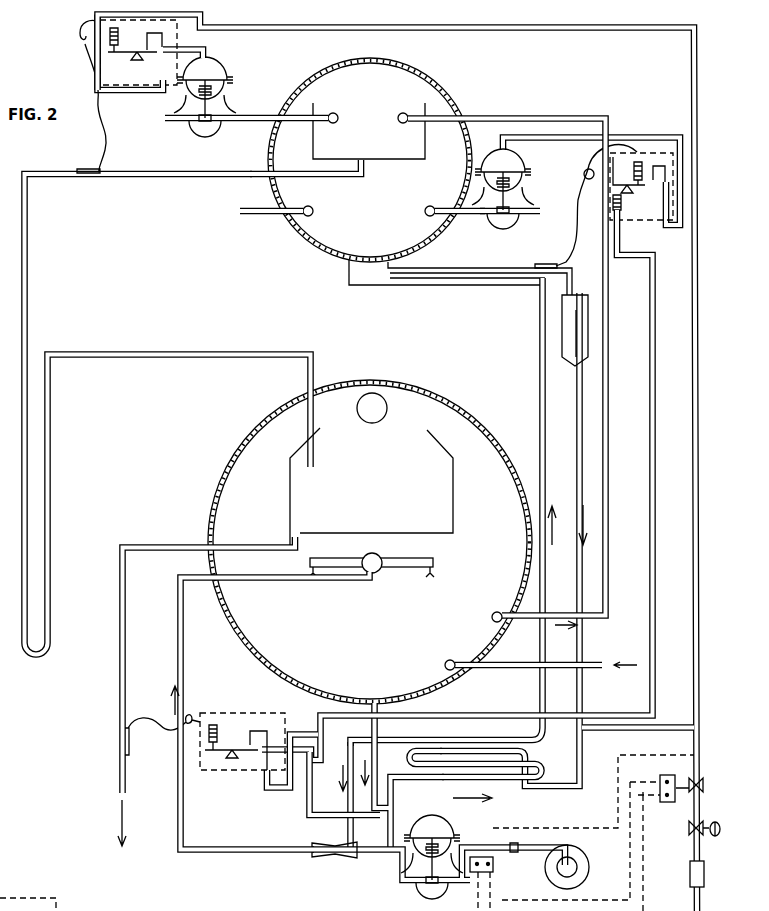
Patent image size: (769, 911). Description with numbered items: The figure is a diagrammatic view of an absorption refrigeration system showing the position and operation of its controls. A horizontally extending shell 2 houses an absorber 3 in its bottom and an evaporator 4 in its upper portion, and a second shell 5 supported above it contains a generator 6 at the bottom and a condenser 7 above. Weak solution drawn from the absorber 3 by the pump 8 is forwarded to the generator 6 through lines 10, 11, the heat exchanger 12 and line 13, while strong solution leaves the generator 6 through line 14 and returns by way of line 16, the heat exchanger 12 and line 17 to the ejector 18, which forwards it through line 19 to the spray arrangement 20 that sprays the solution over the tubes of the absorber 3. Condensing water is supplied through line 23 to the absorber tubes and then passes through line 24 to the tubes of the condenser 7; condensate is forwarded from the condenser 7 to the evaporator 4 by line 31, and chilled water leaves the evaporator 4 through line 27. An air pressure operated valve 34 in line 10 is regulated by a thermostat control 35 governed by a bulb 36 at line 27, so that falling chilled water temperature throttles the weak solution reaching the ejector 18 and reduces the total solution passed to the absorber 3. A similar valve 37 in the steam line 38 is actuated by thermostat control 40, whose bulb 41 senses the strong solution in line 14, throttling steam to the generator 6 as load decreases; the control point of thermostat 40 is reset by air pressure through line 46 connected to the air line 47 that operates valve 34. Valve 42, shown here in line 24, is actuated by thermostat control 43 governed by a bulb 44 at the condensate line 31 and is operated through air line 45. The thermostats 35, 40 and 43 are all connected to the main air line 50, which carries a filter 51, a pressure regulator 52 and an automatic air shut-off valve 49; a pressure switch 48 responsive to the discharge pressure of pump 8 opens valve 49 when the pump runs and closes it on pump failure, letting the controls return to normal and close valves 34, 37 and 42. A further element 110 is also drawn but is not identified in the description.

The shell 2 is at (503, 440).
The absorber 3 is at (228, 605).
The evaporator 4 is at (448, 483).
The second shell 5 is at (273, 156).
The generator 6 is at (325, 248).
The condenser 7 is at (369, 159).
The pump 8 is at (582, 871).
The line 10 is at (495, 866).
The line 11 is at (386, 832).
The heat exchanger 12 is at (545, 764).
The line 13 is at (540, 385).
The line 14 is at (459, 270).
The line 16 is at (579, 385).
The line 17 is at (348, 808).
The ejector 18 is at (335, 856).
The line 19 is at (176, 626).
The spray arrangement 20 is at (376, 575).
The line 23 is at (494, 673).
The line 24 is at (610, 445).
The line 27 is at (118, 626).
The line 31 is at (145, 180).
The air pressure operated valve 34 is at (455, 846).
The thermostat control 35 is at (219, 769).
The bulb 36 is at (130, 742).
The air pressure operated valve 37 is at (488, 222).
The steam line 38 is at (468, 202).
The thermostat control 40 is at (645, 150).
The bulb 41 is at (541, 263).
The air pressure operated valve 42 is at (218, 132).
The thermostat control 43 is at (128, 88).
The bulb 44 is at (90, 168).
The air line 45 is at (208, 53).
The air line 46 is at (655, 385).
The air line 47 is at (325, 824).
The pressure switch 48 is at (478, 875).
The automatic air shut-off valve 49 is at (706, 782).
The main air line 50 is at (698, 572).
The filter 51 is at (706, 870).
The pressure regulator 52 is at (720, 827).
The valve 110 is at (669, 209).